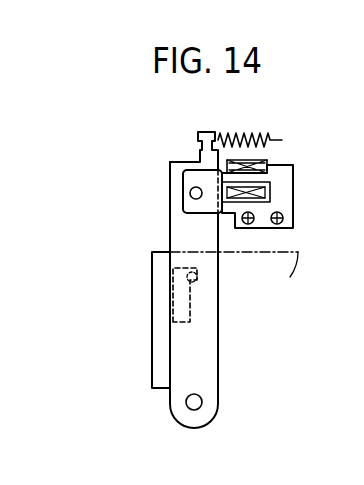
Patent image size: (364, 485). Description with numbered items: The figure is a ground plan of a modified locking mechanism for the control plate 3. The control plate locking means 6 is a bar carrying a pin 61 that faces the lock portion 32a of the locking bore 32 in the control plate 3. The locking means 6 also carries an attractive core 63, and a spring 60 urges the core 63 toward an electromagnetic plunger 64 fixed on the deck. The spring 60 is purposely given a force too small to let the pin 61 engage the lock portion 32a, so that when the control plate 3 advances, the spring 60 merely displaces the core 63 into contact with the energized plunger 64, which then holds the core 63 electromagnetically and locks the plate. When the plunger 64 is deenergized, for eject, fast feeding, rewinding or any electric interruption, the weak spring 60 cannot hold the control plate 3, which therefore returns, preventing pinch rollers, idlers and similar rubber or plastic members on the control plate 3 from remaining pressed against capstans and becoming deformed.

The control plate 3 is at (152, 313).
The control plate locking means 6 is at (220, 378).
The locking bore 32 is at (173, 280).
The lock portion 32a is at (192, 282).
The spring 60 is at (241, 134).
The pin 61 is at (198, 273).
The attractive core 63 is at (195, 175).
The electromagnetic plunger 64 is at (283, 198).